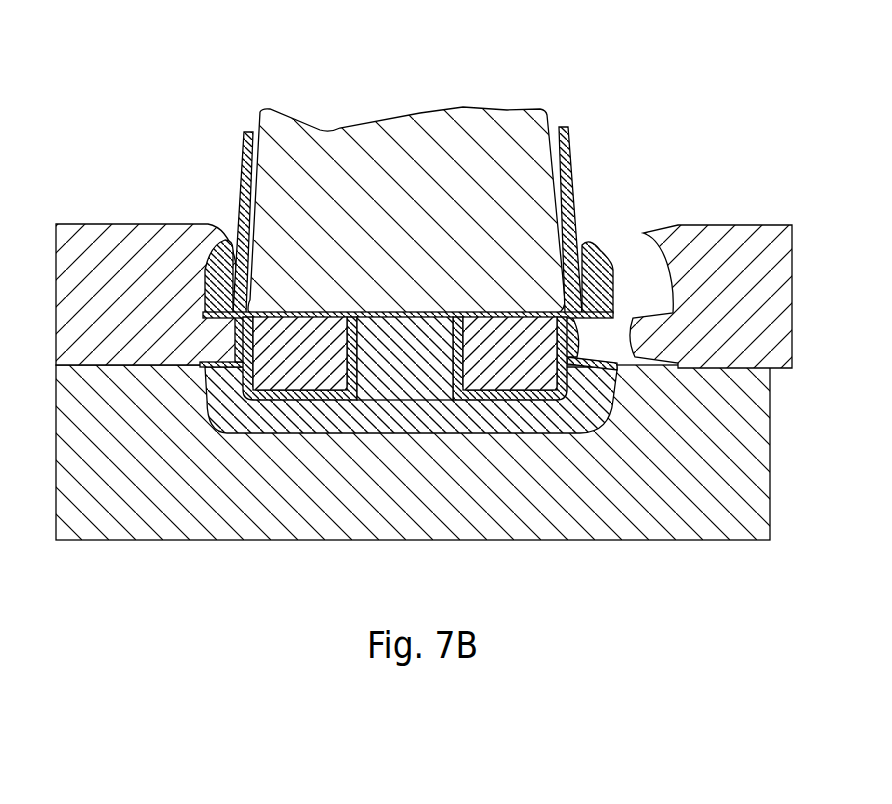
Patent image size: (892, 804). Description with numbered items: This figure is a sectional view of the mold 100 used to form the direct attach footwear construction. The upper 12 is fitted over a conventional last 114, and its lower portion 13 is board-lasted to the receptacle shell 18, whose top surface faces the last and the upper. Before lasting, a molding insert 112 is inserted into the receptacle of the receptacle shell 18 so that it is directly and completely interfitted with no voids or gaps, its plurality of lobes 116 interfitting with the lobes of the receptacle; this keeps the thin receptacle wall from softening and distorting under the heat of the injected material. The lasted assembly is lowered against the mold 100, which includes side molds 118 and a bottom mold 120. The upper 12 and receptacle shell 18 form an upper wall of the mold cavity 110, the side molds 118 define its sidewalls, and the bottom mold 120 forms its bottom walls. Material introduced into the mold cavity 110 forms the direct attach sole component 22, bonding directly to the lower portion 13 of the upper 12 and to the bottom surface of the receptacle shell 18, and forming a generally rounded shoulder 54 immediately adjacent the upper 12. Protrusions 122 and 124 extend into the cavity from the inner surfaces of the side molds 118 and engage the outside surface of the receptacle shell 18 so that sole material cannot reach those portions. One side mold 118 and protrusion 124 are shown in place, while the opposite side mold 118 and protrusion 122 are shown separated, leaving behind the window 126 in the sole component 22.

The mold 100 is at (110, 128).
The upper 12 is at (237, 175).
The lower portion 13 is at (212, 272).
The receptacle shell 18 is at (525, 400).
The direct attach sole component 22 is at (597, 430).
The shoulder 54 is at (606, 263).
The mold cavity 110 is at (250, 420).
The molding insert 112 is at (503, 375).
The last 114 is at (490, 110).
The lobes 116 is at (283, 393).
The side molds 118 is at (56, 283).
The bottom mold 120 is at (687, 540).
The protrusion 122 is at (648, 313).
The protrusion 124 is at (233, 338).
The window 126 is at (597, 340).